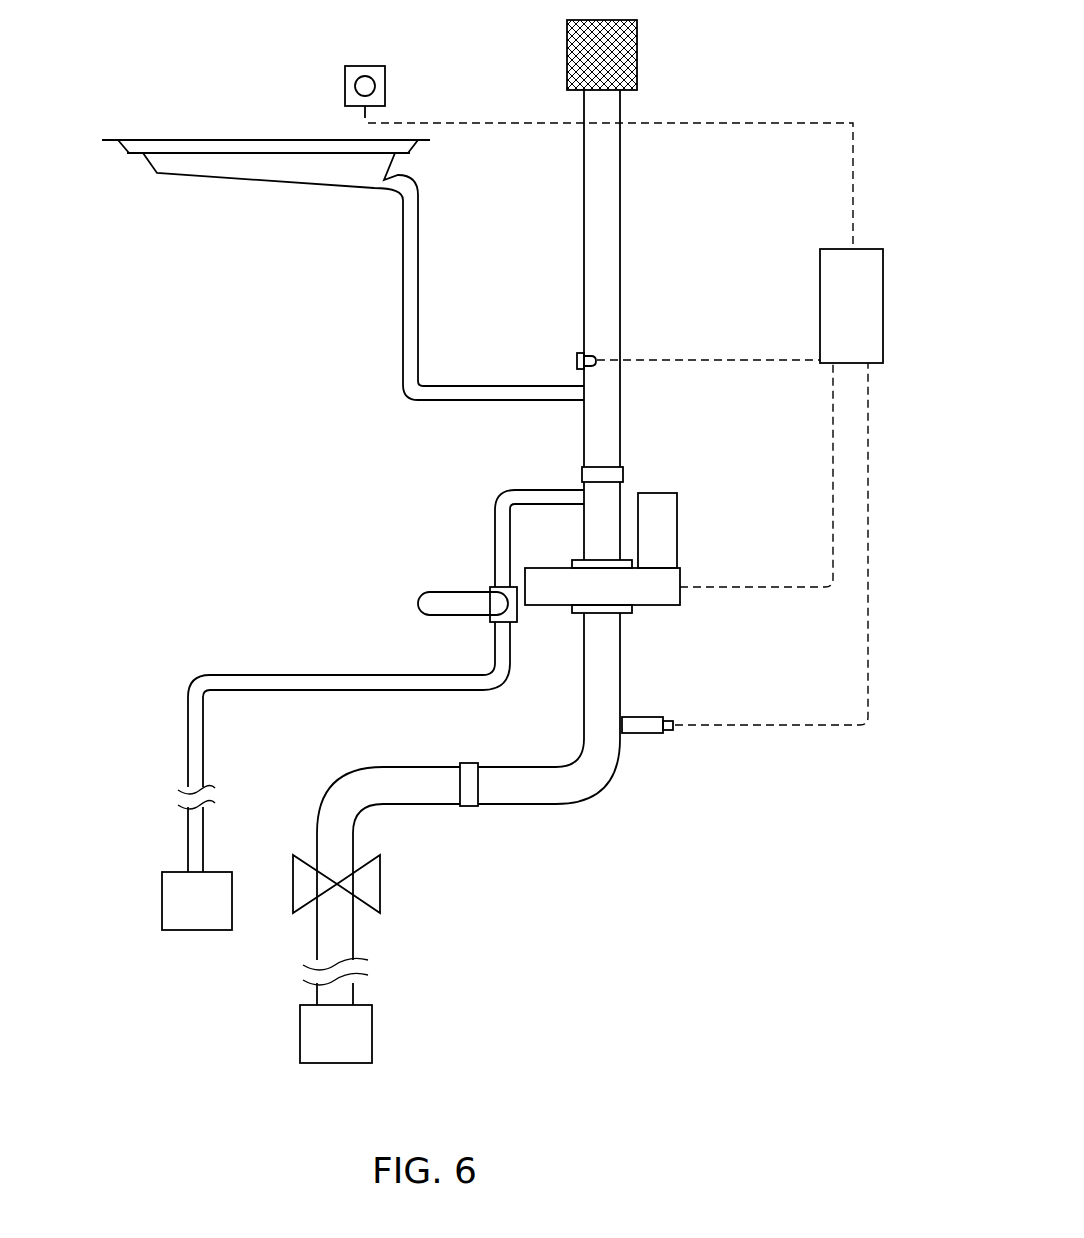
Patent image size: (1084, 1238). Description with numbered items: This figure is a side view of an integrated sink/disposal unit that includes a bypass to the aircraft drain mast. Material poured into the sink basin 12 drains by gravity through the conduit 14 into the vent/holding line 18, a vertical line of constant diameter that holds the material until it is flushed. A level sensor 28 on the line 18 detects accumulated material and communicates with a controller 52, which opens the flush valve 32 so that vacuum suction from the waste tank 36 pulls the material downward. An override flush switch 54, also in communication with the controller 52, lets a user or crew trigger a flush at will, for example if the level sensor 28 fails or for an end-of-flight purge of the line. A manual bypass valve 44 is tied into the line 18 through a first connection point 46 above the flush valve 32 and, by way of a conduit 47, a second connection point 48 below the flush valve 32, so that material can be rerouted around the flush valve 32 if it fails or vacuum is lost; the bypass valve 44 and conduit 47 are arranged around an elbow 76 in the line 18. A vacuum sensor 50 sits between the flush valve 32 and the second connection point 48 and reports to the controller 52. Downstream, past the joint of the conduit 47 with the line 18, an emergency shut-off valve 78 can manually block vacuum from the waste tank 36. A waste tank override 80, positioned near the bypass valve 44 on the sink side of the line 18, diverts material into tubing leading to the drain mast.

The sink basin 12 is at (158, 170).
The conduit 14 is at (408, 273).
The vent/holding line 18 is at (613, 110).
The level sensor 28 is at (577, 360).
The flush valve 32 is at (677, 540).
The waste tank 36 is at (336, 1034).
The manual bypass valve 44 is at (418, 598).
The first connection point 46 is at (584, 490).
The conduit 47 is at (500, 516).
The second connection point 48 is at (483, 767).
The vacuum sensor 50 is at (648, 735).
The controller 52 is at (851, 306).
The override flush switch 54 is at (344, 82).
The elbow 76 is at (580, 787).
The emergency shut-off valve 78 is at (380, 885).
The waste tank override 80 is at (345, 673).